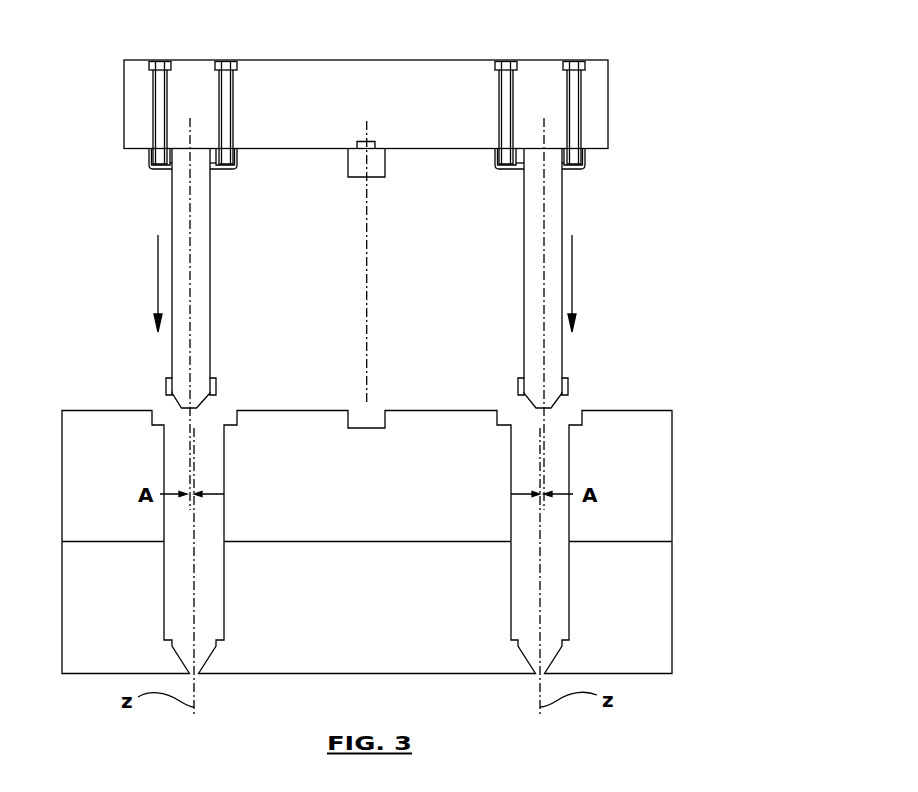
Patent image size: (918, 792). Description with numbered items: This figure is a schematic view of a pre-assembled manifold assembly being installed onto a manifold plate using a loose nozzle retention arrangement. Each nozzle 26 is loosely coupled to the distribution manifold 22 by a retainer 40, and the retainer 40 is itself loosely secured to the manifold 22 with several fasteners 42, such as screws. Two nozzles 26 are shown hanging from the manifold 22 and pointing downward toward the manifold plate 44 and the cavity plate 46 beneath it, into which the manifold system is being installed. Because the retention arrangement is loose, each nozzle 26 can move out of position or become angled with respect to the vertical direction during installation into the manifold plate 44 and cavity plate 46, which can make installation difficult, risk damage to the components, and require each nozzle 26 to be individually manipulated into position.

The manifold 22 is at (453, 76).
The nozzle 26 is at (210, 312).
The retainer 40 is at (155, 176).
The fastener 42 is at (153, 102).
The manifold plate 44 is at (672, 467).
The cavity plate 46 is at (672, 598).